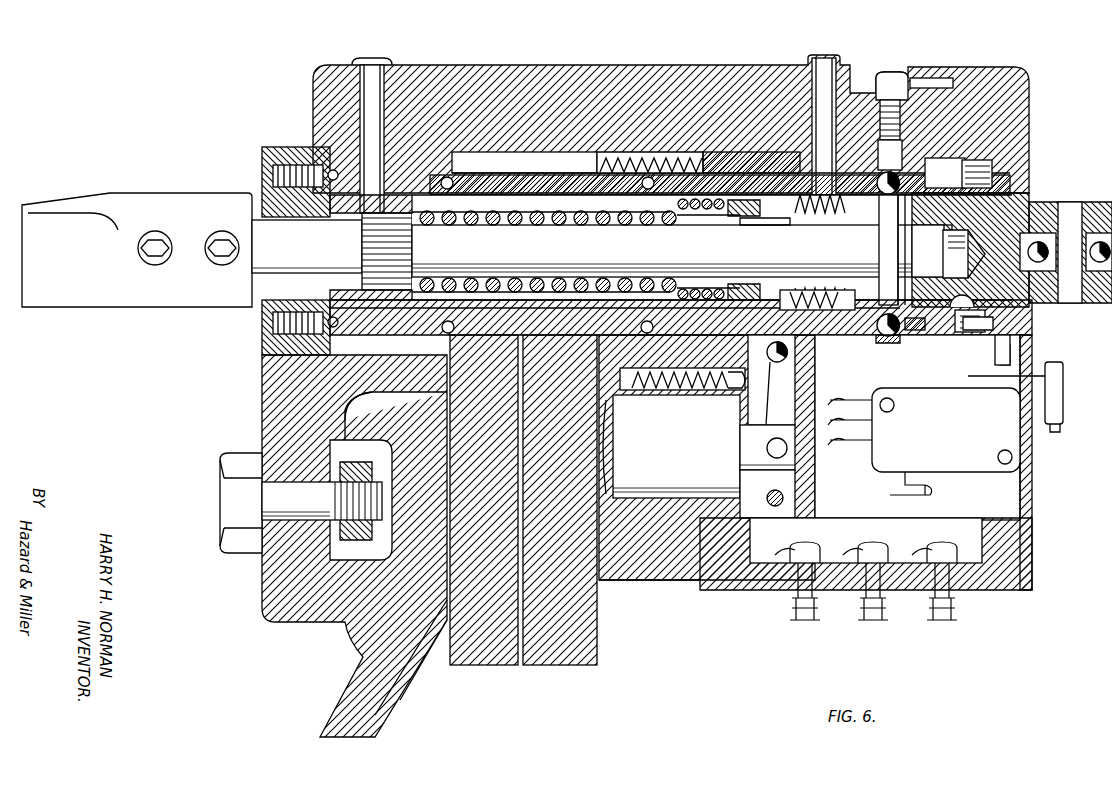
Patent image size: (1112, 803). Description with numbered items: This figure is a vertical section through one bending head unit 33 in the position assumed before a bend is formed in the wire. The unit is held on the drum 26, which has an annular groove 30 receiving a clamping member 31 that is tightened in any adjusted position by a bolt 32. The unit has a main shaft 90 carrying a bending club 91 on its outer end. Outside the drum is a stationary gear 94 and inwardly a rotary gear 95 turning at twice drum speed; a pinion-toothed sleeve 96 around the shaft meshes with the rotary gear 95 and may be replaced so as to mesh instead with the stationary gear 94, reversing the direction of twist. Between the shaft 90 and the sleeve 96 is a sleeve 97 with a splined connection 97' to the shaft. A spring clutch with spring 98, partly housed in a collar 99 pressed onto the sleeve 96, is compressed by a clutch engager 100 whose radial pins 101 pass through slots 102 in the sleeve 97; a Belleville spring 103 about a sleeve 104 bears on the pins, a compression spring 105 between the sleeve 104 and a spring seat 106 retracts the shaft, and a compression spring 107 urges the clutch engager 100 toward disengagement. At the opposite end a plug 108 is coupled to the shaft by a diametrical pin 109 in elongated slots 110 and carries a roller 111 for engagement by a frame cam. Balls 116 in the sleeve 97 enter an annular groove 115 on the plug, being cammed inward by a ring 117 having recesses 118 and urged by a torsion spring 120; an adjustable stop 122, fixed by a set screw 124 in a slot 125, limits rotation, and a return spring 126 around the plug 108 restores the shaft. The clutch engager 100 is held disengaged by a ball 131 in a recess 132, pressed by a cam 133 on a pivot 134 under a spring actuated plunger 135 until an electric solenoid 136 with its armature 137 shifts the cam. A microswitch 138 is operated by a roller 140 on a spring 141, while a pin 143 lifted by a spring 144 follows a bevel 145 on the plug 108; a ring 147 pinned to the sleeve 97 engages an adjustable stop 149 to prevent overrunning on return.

The drum 26 is at (362, 688).
The annular groove 30 is at (355, 453).
The clamping member 31 is at (345, 565).
The bolt 32 is at (235, 512).
The bending head unit 33 is at (490, 66).
The main shaft 90 is at (307, 246).
The bending club 91 is at (143, 205).
The stationary gear 94 is at (598, 646).
The rotary gear 95 is at (490, 648).
The sleeve 96 is at (563, 165).
The sleeve 97 is at (275, 251).
The splined connection 97' is at (421, 251).
The spring clutch spring 98 is at (680, 160).
The collar 99 is at (625, 153).
The clutch engager 100 is at (740, 160).
The radial pins 101 is at (745, 206).
The slots 102 is at (757, 283).
The Belleville spring 103 is at (830, 213).
The sleeve 104 is at (775, 222).
The compression spring 105 is at (560, 216).
The spring seat 106 is at (424, 222).
The compression spring 107 is at (683, 212).
The plug 108 is at (1005, 218).
The diametrical pin 109 is at (889, 215).
The elongated slots 110 is at (907, 220).
The roller 111 is at (1066, 239).
The annular groove 115 is at (962, 225).
The balls 116 is at (878, 190).
The ring 117 is at (895, 345).
The recesses 118 is at (905, 335).
The torsion spring 120 is at (930, 175).
The adjustable stop 122 is at (872, 155).
The set screw 124 is at (893, 85).
The slot 125 is at (885, 120).
The return spring 126 is at (1030, 168).
The ball 131 is at (772, 365).
The recess 132 is at (775, 340).
The cam 133 is at (770, 431).
The pivot 134 is at (768, 494).
The spring actuated plunger 135 is at (740, 380).
The electric solenoid 136 is at (671, 446).
The armature 137 is at (752, 447).
The microswitch 138 is at (1000, 443).
The roller 140 is at (1063, 393).
The spring 141 is at (950, 360).
The pin 143 is at (1015, 345).
The spring 144 is at (1010, 385).
The bevel 145 is at (1015, 308).
The ring 147 is at (968, 340).
The adjustable stop 149 is at (945, 68).